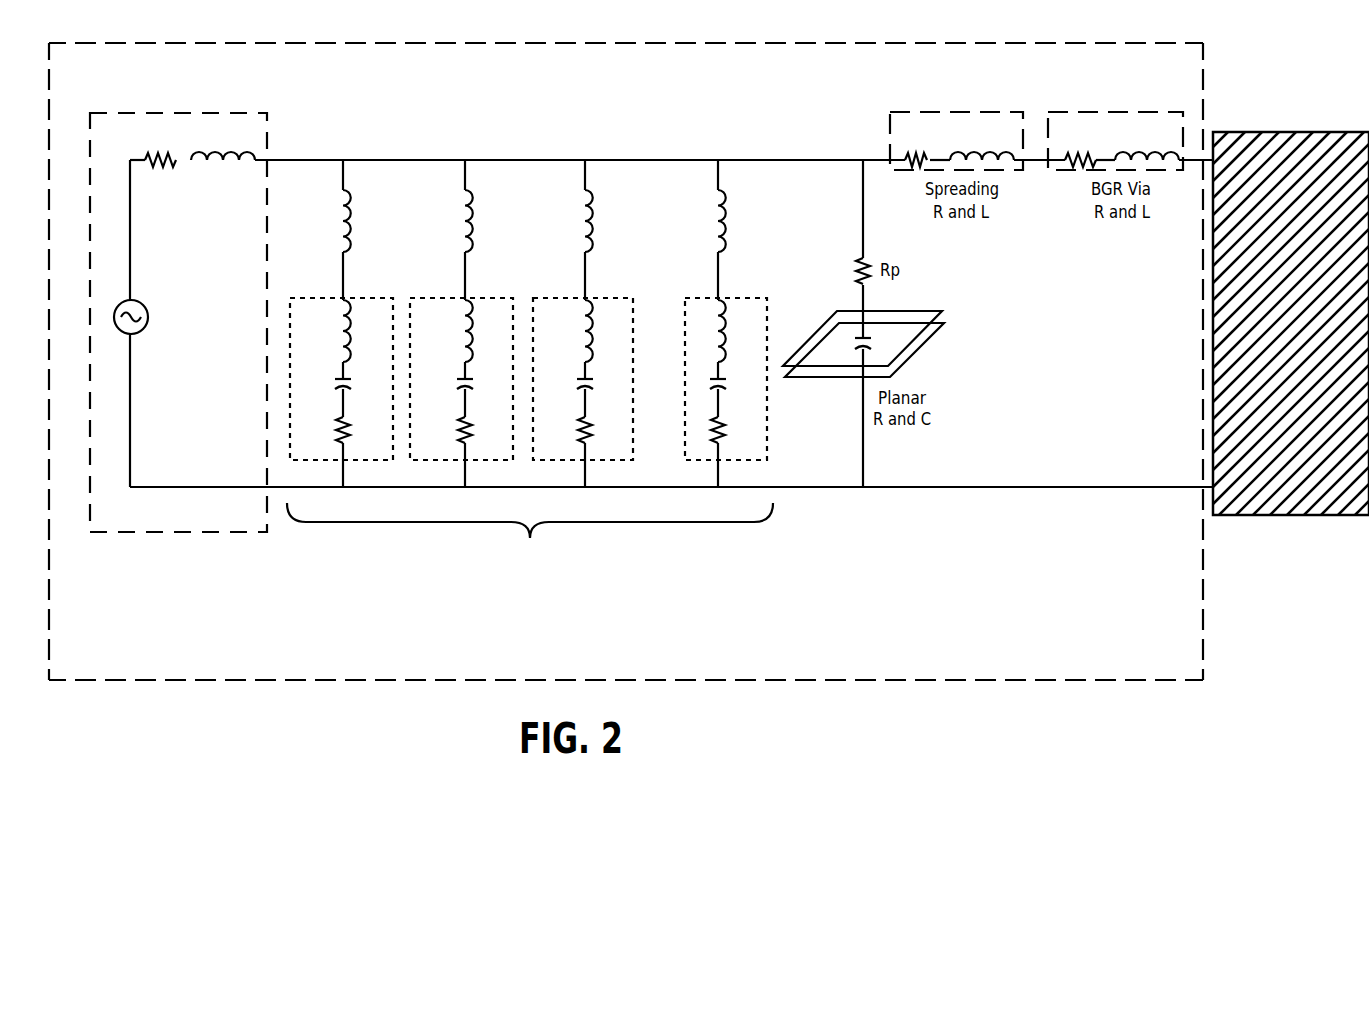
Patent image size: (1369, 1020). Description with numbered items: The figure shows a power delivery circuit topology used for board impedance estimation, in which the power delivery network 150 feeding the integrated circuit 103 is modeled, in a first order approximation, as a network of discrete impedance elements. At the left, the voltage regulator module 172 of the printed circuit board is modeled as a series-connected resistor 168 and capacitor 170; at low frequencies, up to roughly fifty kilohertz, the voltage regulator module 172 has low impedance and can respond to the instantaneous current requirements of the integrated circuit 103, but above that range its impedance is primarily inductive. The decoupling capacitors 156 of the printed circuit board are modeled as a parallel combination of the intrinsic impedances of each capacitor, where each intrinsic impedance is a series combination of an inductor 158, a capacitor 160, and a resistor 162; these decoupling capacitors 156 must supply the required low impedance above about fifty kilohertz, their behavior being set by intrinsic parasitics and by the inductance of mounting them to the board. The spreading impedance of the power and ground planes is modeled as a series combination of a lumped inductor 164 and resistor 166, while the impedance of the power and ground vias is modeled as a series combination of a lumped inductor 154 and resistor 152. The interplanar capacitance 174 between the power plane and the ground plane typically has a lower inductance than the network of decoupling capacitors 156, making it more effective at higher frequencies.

The power delivery network 150 is at (1090, 43).
The integrated circuit 103 is at (1283, 132).
The resistor 152 is at (1086, 150).
The lumped inductor 154 is at (1160, 148).
The decoupling capacitors 156 is at (565, 390).
The inductor 158 is at (745, 299).
The capacitor 160 is at (758, 365).
The resistor 162 is at (768, 429).
The lumped inductor 164 is at (1000, 148).
The resistor 166 is at (904, 160).
The resistor 168 is at (150, 160).
The capacitor 170 is at (240, 157).
The voltage regulator module 172 is at (96, 533).
The interplanar capacitance 174 is at (900, 350).